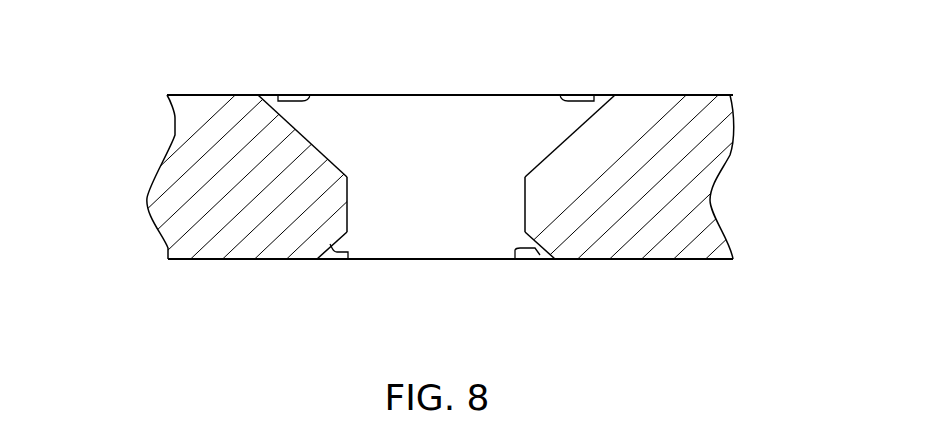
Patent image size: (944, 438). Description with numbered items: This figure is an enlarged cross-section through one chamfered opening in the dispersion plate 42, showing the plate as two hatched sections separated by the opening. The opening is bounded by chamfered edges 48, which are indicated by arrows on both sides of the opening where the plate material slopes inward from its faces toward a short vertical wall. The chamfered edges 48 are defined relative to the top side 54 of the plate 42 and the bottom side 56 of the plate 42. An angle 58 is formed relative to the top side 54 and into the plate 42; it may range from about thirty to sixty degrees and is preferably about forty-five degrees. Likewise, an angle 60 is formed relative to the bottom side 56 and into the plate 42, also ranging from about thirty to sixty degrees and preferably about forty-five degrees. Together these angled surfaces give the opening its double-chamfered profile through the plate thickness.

The plate 42 is at (177, 192).
The chamfered edges 48 is at (548, 149).
The top side 54 is at (218, 95).
The bottom side 56 is at (228, 259).
The angle 58 is at (311, 95).
The angle 60 is at (348, 259).